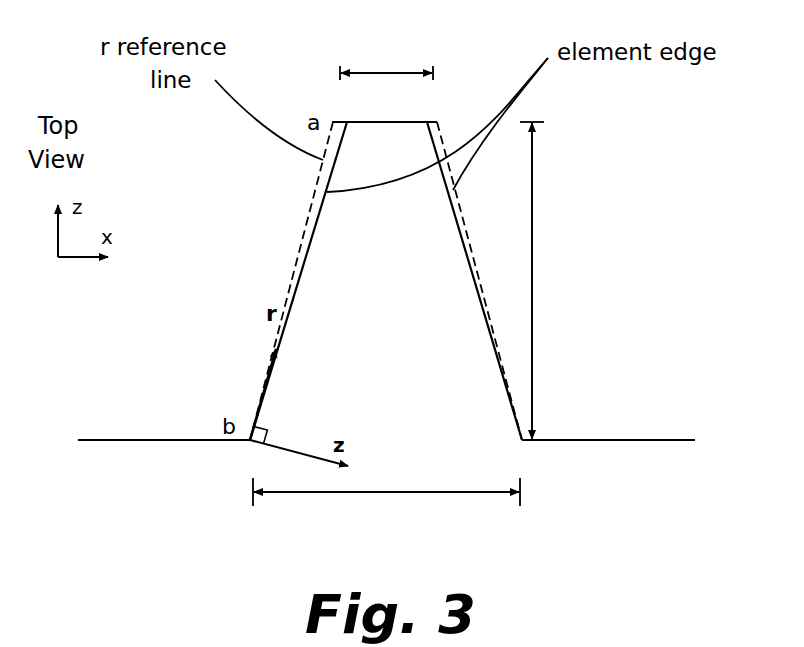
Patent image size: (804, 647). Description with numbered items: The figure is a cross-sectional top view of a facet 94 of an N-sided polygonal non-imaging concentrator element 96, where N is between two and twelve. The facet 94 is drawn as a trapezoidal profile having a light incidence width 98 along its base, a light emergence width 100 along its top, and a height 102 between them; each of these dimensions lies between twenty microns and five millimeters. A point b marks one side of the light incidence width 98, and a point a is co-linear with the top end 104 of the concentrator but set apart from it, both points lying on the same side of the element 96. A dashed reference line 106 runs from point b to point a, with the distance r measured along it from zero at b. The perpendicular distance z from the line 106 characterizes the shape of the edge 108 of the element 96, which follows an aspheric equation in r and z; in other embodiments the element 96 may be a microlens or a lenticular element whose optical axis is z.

The facet 94 is at (575, 481).
The non-imaging concentrator element 96 is at (404, 338).
The light incidence width 98 is at (408, 492).
The light emergence width 100 is at (390, 73).
The height 102 is at (532, 186).
The top end 104 is at (400, 118).
The line 106 is at (308, 212).
The edge 108 is at (313, 232).